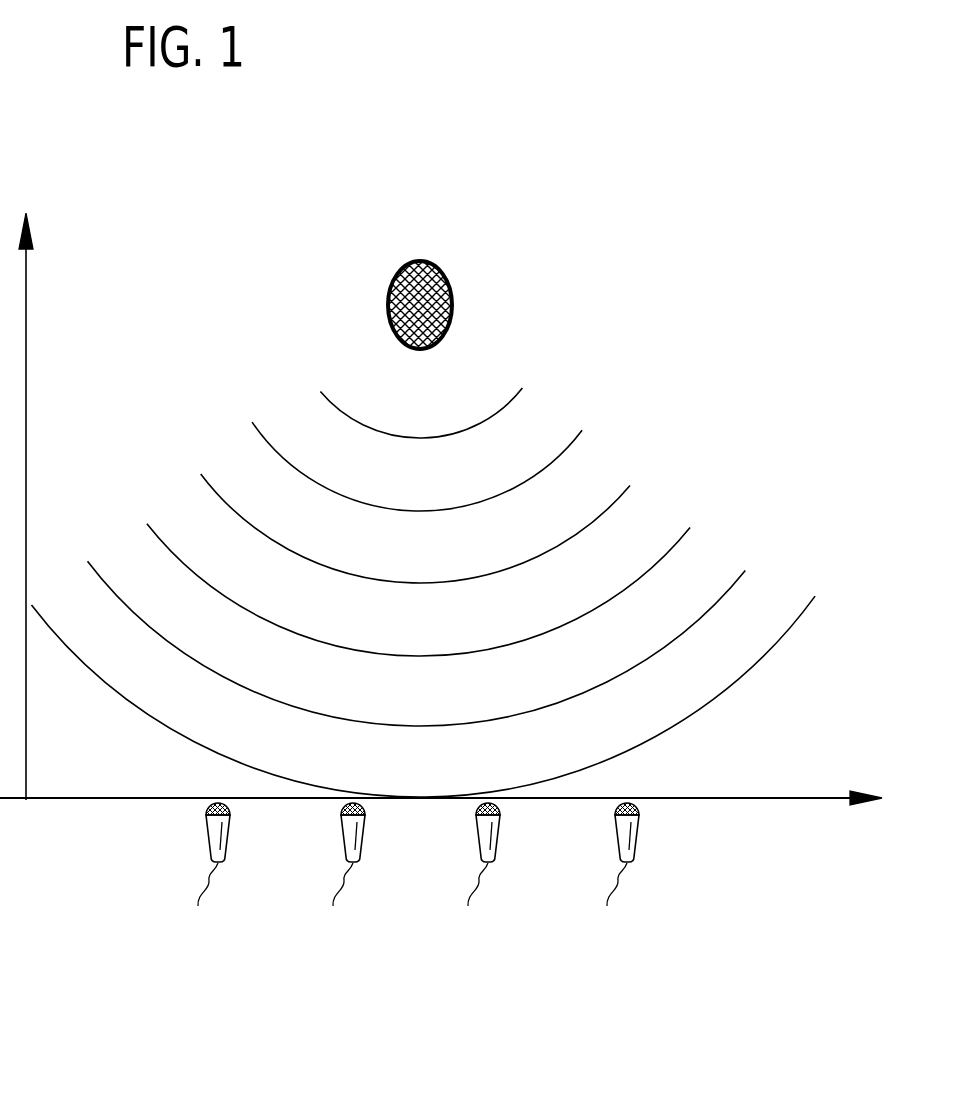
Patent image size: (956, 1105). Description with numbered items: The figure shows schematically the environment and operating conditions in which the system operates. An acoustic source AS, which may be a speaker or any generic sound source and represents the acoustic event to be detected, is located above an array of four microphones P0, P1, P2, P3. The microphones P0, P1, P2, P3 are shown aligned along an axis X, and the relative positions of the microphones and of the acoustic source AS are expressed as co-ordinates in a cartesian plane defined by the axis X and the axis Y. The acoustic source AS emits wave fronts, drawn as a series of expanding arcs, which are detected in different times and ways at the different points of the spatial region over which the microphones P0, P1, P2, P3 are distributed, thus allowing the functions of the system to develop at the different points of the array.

The acoustic source AS is at (419, 260).
The microphone P0 is at (227, 853).
The microphone P1 is at (362, 853).
The microphone P2 is at (497, 853).
The microphone P3 is at (636, 853).
The axis X is at (441, 816).
The axis Y is at (22, 487).